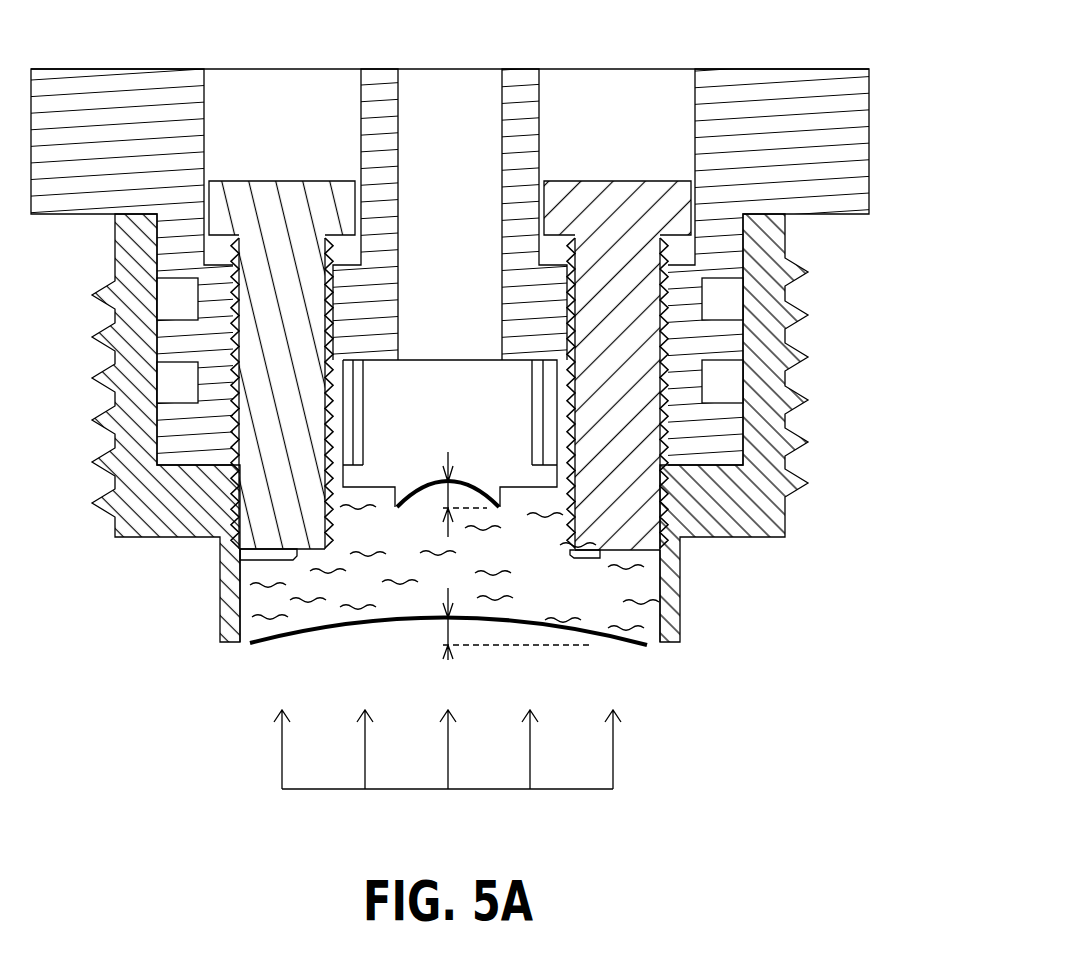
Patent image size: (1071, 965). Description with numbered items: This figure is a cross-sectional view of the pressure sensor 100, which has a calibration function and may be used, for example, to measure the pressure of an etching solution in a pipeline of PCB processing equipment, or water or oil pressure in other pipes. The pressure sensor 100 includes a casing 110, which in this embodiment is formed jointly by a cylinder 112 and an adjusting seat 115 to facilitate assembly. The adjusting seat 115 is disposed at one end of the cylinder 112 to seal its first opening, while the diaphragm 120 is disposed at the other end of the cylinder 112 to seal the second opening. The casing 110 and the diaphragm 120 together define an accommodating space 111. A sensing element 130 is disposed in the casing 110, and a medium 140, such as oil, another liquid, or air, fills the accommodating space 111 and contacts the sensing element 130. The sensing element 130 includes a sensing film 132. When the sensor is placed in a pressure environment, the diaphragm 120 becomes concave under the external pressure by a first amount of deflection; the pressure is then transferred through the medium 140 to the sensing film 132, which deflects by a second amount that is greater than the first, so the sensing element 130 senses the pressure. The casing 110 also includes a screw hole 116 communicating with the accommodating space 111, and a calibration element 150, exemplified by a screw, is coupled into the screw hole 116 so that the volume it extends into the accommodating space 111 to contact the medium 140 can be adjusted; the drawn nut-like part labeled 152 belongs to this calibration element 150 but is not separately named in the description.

The pressure sensor 100 is at (471, 418).
The casing 110 is at (471, 322).
The accommodating space 111 is at (589, 598).
The cylinder 112 is at (771, 353).
The adjusting seat 115 is at (796, 77).
The screw hole 116 is at (675, 89).
The diaphragm 120 is at (369, 632).
The sensing element 130 is at (393, 455).
The sensing film 132 is at (474, 486).
The medium 140 is at (317, 592).
The calibration element 150 is at (513, 385).
The nut 152 is at (617, 537).